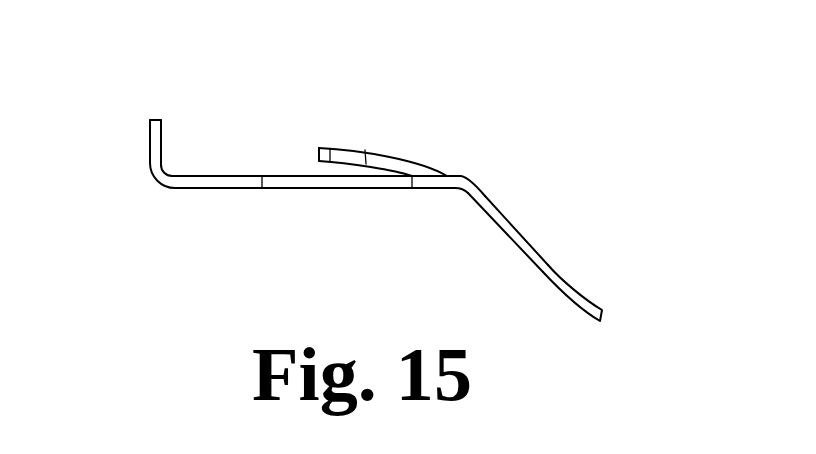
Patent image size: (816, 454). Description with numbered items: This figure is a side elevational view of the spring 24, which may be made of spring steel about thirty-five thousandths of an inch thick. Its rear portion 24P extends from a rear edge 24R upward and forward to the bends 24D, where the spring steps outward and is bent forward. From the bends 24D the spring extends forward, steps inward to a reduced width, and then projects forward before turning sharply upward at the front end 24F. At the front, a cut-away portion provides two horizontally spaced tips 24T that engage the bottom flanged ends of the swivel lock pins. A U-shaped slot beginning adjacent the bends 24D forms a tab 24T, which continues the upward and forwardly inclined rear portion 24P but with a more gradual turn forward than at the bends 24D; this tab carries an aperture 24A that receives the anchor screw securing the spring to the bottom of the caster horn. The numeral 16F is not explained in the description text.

The spring 24 is at (193, 253).
The front wall of housing 16F is at (148, 140).
The front end 24F is at (150, 168).
The tips 24T is at (155, 118).
The aperture 24A is at (347, 147).
The bends 24D is at (466, 178).
The rear portion 24P is at (512, 232).
The rear edge 24R is at (603, 312).